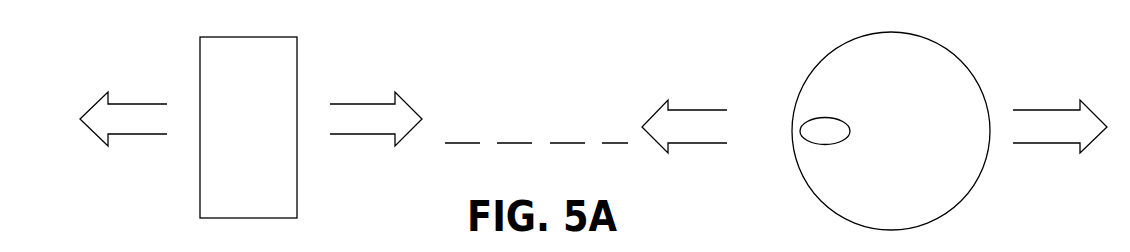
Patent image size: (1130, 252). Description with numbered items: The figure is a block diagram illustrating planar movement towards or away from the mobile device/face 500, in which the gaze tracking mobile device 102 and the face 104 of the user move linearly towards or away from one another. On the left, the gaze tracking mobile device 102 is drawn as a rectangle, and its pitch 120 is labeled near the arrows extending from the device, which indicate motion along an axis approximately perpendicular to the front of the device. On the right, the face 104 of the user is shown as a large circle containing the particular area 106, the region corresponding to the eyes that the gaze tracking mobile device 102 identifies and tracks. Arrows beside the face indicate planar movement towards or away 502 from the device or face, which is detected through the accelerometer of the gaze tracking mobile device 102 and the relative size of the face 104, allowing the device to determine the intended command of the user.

The planar movement towards or away from the mobile device/face 500 is at (140, 35).
The gaze tracking mobile device 102 is at (235, 159).
The pitch 120 is at (470, 93).
The face 104 is at (798, 93).
The particular area 106 is at (797, 137).
The planar movement towards or away 502 is at (1040, 143).